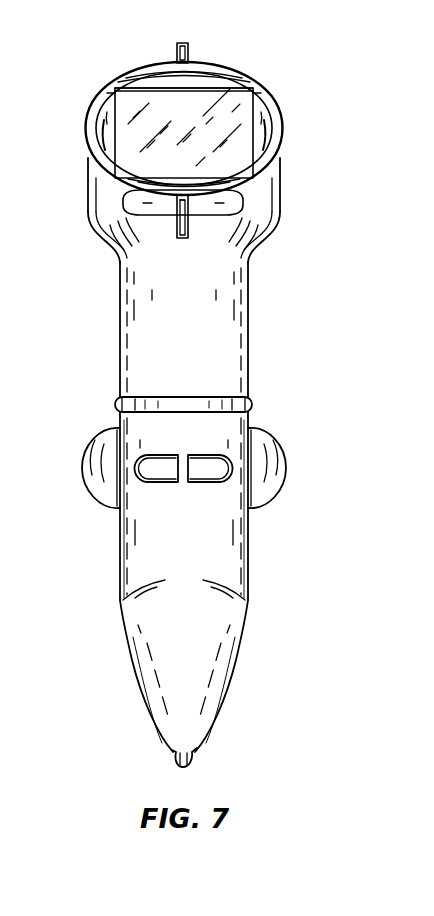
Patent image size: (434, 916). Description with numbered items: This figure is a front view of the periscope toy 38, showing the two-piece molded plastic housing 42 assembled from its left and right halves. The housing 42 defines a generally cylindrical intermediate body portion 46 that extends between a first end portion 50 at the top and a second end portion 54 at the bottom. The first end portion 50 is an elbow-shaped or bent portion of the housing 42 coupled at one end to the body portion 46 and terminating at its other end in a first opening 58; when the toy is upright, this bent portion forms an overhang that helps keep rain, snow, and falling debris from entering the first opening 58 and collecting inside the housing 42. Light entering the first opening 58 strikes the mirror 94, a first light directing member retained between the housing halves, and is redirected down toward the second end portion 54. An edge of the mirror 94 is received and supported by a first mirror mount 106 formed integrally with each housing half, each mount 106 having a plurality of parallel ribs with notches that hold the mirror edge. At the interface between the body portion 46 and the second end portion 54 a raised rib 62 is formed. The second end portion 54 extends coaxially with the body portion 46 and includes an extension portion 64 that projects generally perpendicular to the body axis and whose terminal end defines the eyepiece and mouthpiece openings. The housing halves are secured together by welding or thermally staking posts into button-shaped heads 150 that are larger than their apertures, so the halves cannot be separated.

The periscope toy 38 is at (279, 200).
The housing 42 is at (262, 246).
The body portion 46 is at (248, 318).
The first end portion 50 is at (281, 160).
The second end portion 54 is at (243, 528).
The first opening 58 is at (267, 118).
The raised rib 62 is at (252, 400).
The extension portion 64 is at (266, 440).
The mirror 94 is at (229, 95).
The first mirror mount 106 is at (104, 111).
The button-shaped head 150 is at (176, 55).